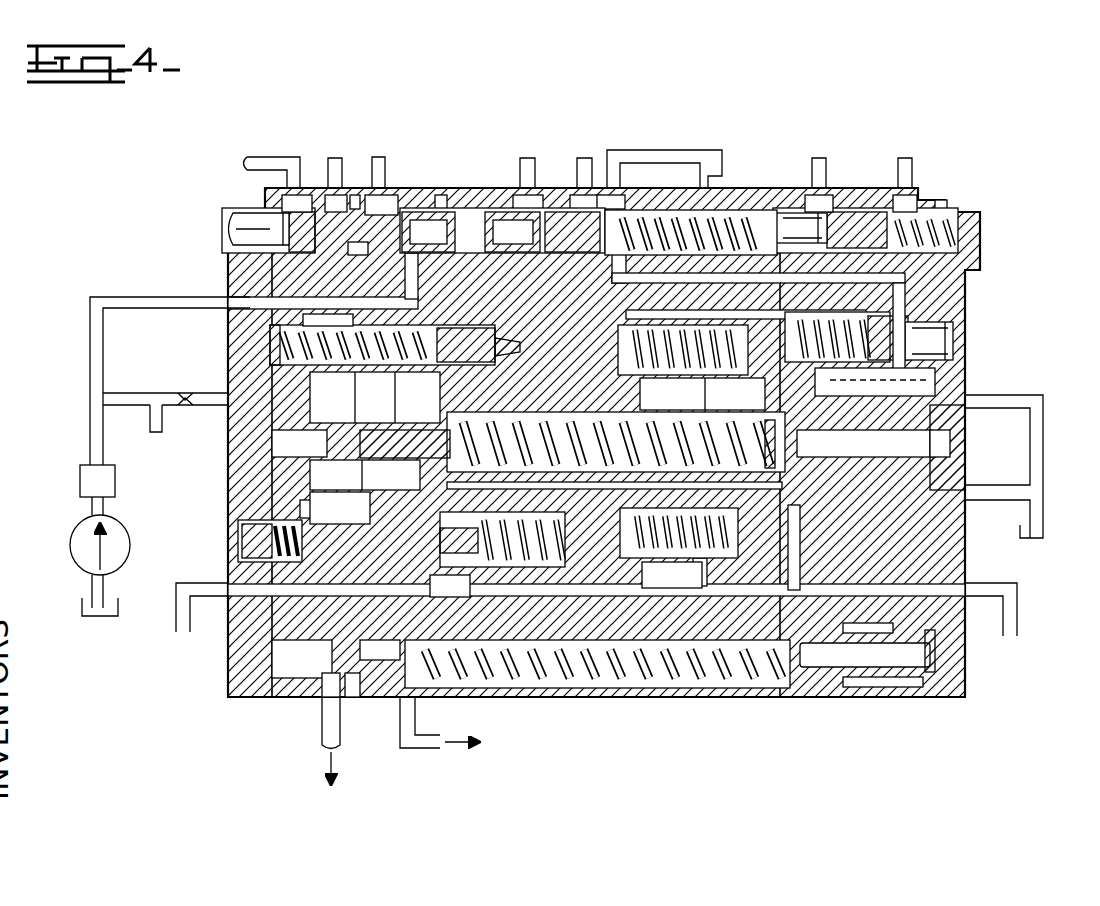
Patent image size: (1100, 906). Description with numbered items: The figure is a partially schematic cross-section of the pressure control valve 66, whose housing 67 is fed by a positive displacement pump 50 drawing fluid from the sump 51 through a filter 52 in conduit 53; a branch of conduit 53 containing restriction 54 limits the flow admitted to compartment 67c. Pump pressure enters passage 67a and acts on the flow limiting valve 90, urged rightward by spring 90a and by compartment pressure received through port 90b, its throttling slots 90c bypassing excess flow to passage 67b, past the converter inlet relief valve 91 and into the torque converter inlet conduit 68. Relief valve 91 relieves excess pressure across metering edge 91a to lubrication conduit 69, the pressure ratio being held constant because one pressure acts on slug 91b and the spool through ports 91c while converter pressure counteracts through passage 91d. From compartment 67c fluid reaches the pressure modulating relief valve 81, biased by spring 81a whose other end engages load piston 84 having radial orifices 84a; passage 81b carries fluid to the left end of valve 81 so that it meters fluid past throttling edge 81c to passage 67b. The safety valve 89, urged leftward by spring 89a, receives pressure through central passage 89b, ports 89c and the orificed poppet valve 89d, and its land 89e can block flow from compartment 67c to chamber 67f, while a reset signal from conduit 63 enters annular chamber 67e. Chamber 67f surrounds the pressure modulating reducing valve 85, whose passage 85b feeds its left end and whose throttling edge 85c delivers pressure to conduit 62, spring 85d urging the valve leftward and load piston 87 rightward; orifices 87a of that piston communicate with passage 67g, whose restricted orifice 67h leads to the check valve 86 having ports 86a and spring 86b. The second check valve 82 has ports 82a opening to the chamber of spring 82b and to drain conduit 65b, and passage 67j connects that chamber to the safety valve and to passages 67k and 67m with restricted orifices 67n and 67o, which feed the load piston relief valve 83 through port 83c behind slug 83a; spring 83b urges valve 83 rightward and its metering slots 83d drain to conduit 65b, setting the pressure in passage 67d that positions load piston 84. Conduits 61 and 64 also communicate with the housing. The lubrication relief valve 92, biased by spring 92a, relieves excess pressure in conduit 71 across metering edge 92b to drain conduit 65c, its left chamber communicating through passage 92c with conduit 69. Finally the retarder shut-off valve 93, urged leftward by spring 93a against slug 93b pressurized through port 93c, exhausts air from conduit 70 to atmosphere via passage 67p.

The positive displacement pump 50 is at (90, 535).
The sump 51 is at (90, 622).
The filter 52 is at (80, 472).
The conduit 53 is at (95, 315).
The restriction 54 is at (185, 396).
The conduit 61 is at (345, 735).
The conduit 62 is at (440, 760).
The conduit 63 is at (178, 600).
The conduit 64 is at (1017, 607).
The drain conduit 65b is at (1035, 468).
The drain conduit 65c is at (660, 162).
The pressure control valve 66 is at (145, 150).
The housing 67 is at (232, 697).
The passage 67a is at (270, 300).
The passage 67b is at (367, 270).
The compartment 67c is at (352, 488).
The passage 67d is at (1001, 415).
The annular chamber 67e is at (465, 582).
The chamber 67f is at (320, 738).
The passage 67g is at (818, 585).
The restricted orifice 67h is at (700, 598).
The passage 67j is at (570, 382).
The passage 67k is at (636, 292).
The passage 67m is at (707, 261).
The restricted orifice 67n is at (640, 312).
The restricted orifice 67o is at (808, 285).
The passage 67p is at (958, 210).
The torque converter inlet conduit 68 is at (378, 180).
The lubrication conduit 69 is at (332, 162).
The conduit 70 is at (910, 165).
The conduit 71 is at (525, 165).
The pressure modulating relief valve 81 is at (418, 423).
The spring 81a is at (848, 444).
The passage 81b is at (280, 442).
The throttling edge 81c is at (403, 417).
The spring loaded check valve 82 is at (630, 350).
The radially disposed ports 82a is at (731, 394).
The spring 82b is at (702, 394).
The load piston relief valve 83 is at (935, 330).
The slug 83a is at (950, 345).
The spring 83b is at (790, 340).
The port 83c is at (925, 325).
The metering slots 83d is at (940, 382).
The load piston 84 is at (848, 428).
The radially disposed orifices 84a is at (945, 443).
The pressure modulating reducing valve 85 is at (280, 645).
The centrally disposed passage 85b is at (318, 697).
The throttling edge 85c is at (364, 705).
The spring 85d is at (630, 688).
The spring loaded check valve 86 is at (640, 530).
The radially disposed ports 86a is at (722, 518).
The spring 86b is at (672, 576).
The load piston 87 is at (800, 688).
The radially disposed orifices 87a is at (922, 688).
The safety valve 89 is at (258, 562).
The spring 89a is at (548, 548).
The centrally disposed passage 89b is at (340, 508).
The ports 89c is at (300, 505).
The spring biased poppet valve 89d is at (232, 530).
The land 89e is at (387, 475).
The flow limiting valve 90 is at (540, 330).
The spring 90a is at (275, 345).
The port 90b is at (300, 318).
The throttling slots 90c is at (431, 305).
The converter inlet relief valve 91 is at (242, 260).
The metering edge 91a is at (368, 190).
The slug 91b is at (240, 228).
The ports 91c is at (272, 218).
The passage 91d is at (442, 205).
The lubrication relief valve 92 is at (470, 258).
The spring 92a is at (660, 230).
The metering edge 92b is at (600, 192).
The passage 92c is at (542, 252).
The hydrodynamic retarder shut-off valve 93 is at (870, 205).
The spring 93a is at (970, 240).
The slug 93b is at (805, 225).
The port 93c is at (880, 205).